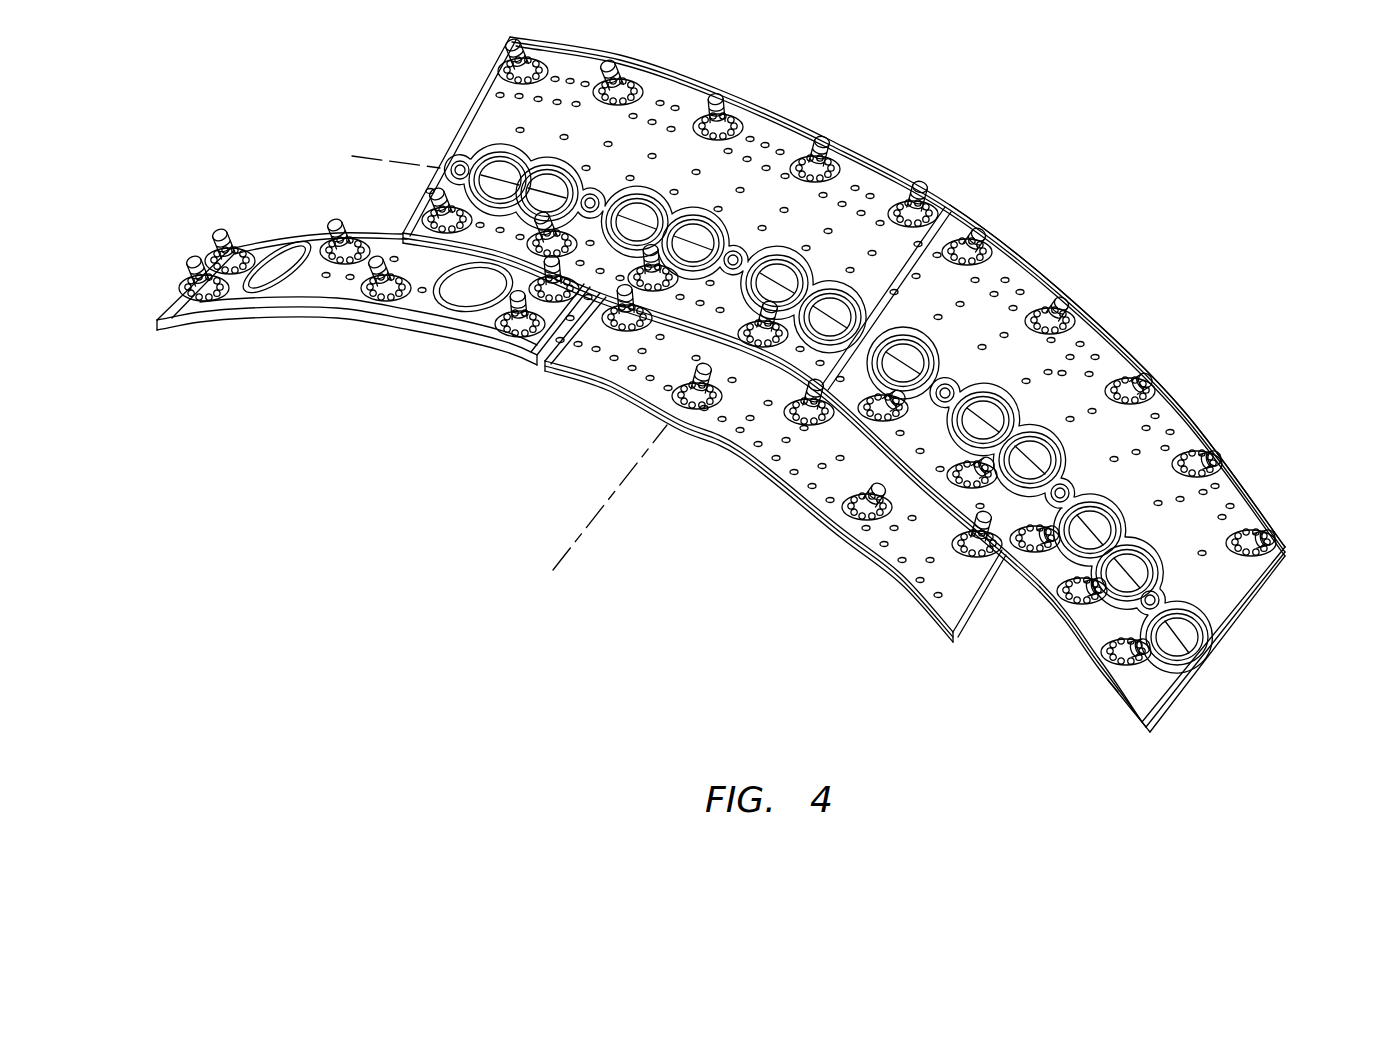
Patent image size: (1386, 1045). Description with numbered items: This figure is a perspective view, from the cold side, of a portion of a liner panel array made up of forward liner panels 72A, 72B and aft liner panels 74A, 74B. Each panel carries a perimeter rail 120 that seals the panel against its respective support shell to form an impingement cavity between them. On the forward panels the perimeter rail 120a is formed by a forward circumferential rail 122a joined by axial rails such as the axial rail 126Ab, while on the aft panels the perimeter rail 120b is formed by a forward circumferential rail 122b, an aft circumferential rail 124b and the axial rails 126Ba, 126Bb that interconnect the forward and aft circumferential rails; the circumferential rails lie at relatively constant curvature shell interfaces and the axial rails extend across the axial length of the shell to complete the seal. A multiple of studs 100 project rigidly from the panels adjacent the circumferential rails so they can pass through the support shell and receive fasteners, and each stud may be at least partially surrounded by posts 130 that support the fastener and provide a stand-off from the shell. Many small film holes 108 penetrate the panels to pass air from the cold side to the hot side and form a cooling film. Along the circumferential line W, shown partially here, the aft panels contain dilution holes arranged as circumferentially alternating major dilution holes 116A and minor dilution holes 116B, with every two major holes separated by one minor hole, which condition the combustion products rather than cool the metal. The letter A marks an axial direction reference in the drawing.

The perimeter rail 120 is at (1268, 574).
The perimeter rail 120a is at (798, 514).
The perimeter rail 120b is at (1052, 274).
The forward circumferential rail 122a is at (908, 590).
The forward circumferential rail 122b is at (1018, 560).
The aft circumferential rail 124b is at (1185, 412).
The axial rail 126Ab is at (974, 606).
The axial rail 126Ba is at (917, 292).
The axial rail 126Bb is at (1240, 602).
The stud 100 is at (704, 410).
The film hole 108 is at (1066, 371).
The major dilution hole 116A is at (1033, 458).
The minor dilution hole 116B is at (1070, 492).
The post 130 is at (1120, 688).
The forward liner panel 72A is at (796, 519).
The forward liner panel 72B is at (958, 636).
The aft liner panel 74A is at (1093, 479).
The aft liner panel 74B is at (1254, 648).
The circumferential line W is at (352, 133).
The axial direction A is at (556, 560).